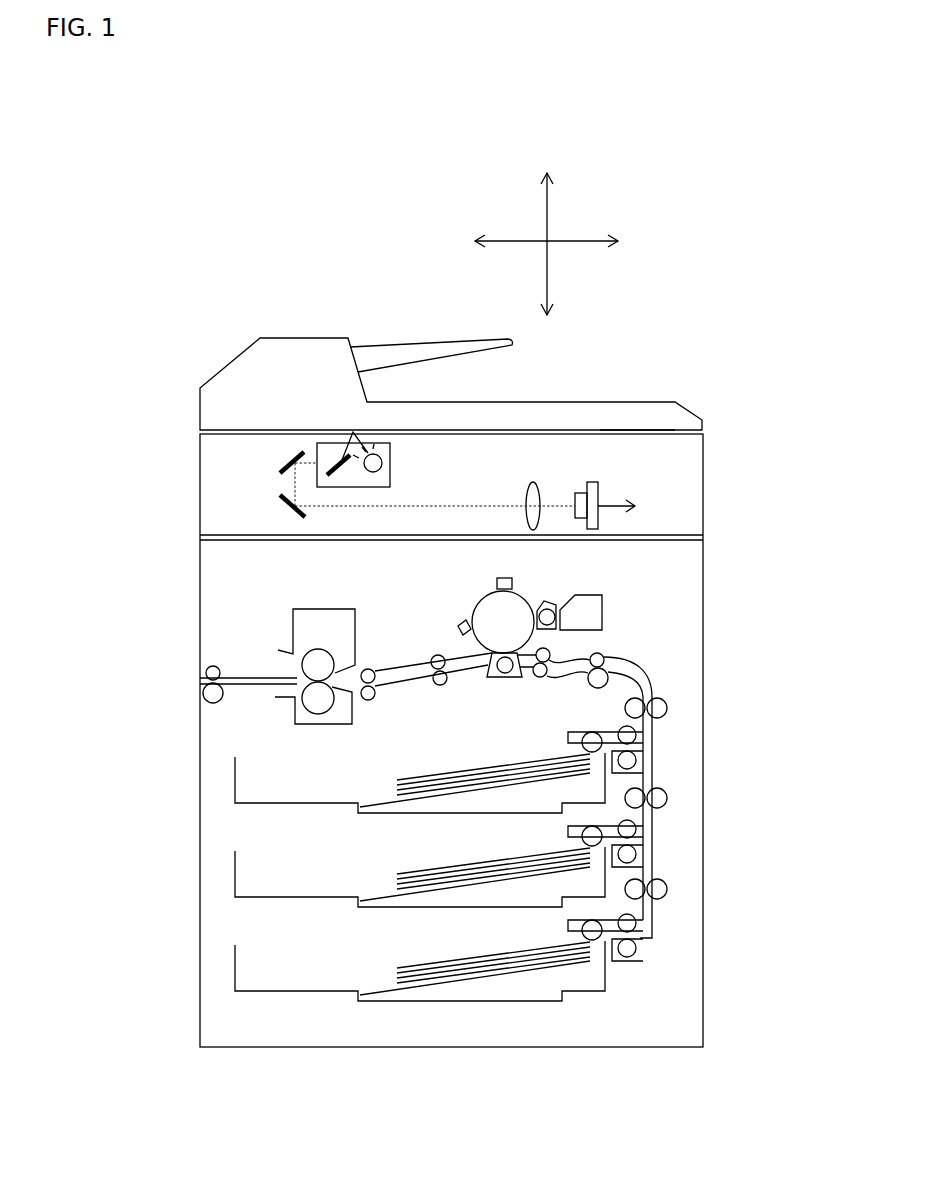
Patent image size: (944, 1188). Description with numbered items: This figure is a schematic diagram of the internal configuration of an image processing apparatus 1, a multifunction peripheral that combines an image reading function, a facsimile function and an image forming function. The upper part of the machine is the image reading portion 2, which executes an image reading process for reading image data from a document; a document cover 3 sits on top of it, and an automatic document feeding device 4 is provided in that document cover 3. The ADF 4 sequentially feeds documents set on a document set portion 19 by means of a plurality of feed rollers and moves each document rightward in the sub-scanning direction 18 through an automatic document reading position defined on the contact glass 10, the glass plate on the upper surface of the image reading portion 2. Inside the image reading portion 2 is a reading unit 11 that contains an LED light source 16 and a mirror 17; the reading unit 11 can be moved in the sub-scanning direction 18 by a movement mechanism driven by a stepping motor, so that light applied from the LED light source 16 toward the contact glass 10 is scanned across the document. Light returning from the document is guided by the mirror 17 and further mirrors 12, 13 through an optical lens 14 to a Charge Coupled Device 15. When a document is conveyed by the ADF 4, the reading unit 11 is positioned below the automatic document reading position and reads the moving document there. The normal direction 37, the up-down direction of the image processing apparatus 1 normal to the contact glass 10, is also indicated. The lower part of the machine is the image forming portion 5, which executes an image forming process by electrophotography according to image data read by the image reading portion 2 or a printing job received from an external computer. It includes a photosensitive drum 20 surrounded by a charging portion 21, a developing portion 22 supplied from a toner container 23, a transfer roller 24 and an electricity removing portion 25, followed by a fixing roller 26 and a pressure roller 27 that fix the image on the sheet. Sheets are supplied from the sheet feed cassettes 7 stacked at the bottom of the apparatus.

The image processing apparatus 1 is at (230, 1083).
The image reading portion 2 is at (487, 467).
The document cover 3 is at (473, 342).
The automatic document feeding device 4 is at (280, 337).
The image forming portion 5 is at (487, 794).
The sheet feed cassette 7 is at (372, 813).
The contact glass 10 is at (637, 430).
The reading unit 11 is at (390, 459).
The mirror 12 is at (283, 470).
The mirror 13 is at (282, 498).
The optical lens 14 is at (530, 486).
The Charge Coupled Device 15 is at (590, 483).
The LED light source 16 is at (381, 469).
The mirror 17 is at (342, 461).
The sub-scanning direction 18 is at (590, 240).
The document set portion 19 is at (426, 346).
The photosensitive drum 20 is at (482, 597).
The charging portion 21 is at (507, 578).
The developing portion 22 is at (552, 606).
The toner container 23 is at (603, 617).
The transfer roller 24 is at (493, 680).
The electricity removing portion 25 is at (458, 626).
The fixing roller 26 is at (307, 653).
The pressure roller 27 is at (310, 712).
The normal direction 37 is at (545, 208).